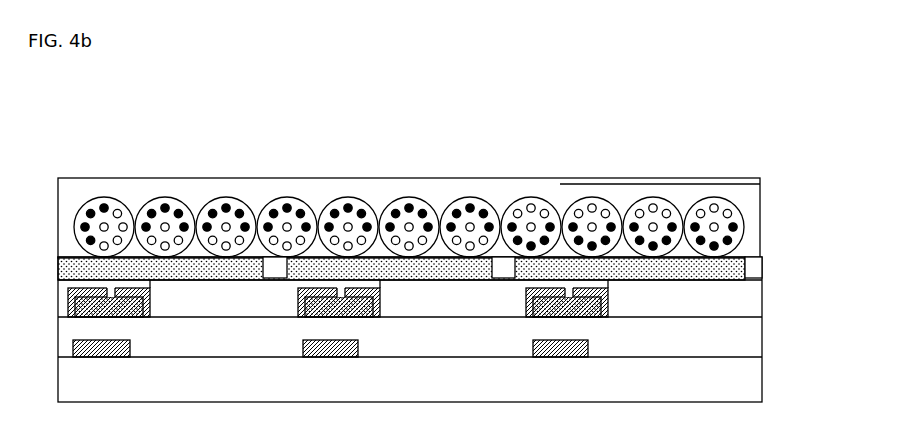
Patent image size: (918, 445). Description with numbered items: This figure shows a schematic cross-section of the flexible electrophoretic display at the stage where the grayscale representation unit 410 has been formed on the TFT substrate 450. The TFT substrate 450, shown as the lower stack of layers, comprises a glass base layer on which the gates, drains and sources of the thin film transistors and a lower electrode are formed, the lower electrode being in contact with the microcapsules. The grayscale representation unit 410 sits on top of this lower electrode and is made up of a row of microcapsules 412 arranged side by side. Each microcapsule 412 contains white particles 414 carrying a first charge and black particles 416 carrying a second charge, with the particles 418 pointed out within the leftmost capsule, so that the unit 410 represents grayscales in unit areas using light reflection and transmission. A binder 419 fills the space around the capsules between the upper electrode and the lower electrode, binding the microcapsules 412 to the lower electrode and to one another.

The grayscale representation unit 410 is at (760, 178).
The microcapsules 412 is at (715, 198).
The white particles 414 is at (118, 212).
The black particles 416 is at (84, 205).
The black charged particles 418 is at (91, 212).
The binder 419 is at (667, 192).
The TFT substrate 450 is at (762, 262).